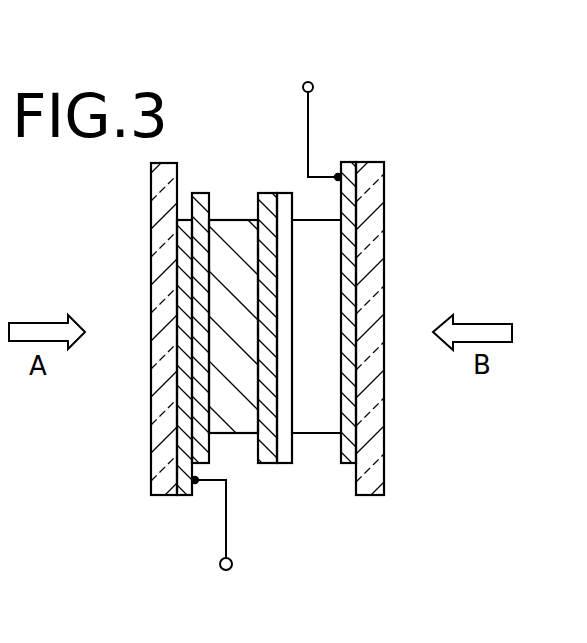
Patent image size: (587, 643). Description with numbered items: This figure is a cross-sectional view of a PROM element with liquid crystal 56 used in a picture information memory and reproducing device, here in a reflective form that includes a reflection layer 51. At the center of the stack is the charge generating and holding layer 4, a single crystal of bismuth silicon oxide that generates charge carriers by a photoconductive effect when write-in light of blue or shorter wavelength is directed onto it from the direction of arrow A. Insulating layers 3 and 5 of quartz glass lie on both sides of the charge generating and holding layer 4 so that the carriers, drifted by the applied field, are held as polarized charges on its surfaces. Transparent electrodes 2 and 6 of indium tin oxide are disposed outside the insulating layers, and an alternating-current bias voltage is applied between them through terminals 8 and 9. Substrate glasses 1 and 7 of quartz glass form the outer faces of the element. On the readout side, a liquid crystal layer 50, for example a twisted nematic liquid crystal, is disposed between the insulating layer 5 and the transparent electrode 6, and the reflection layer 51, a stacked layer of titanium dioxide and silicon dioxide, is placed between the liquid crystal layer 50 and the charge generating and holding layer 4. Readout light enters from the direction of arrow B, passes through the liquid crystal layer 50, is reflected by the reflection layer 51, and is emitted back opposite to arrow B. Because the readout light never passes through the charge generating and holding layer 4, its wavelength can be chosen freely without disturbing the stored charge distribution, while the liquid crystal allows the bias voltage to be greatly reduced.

The substrate glass 1 is at (160, 496).
The transparent electrode 2 is at (183, 496).
The insulating layer 3 is at (200, 192).
The charge generating and holding layer 4 is at (235, 425).
The insulating layer 5 is at (265, 192).
The transparent electrode 6 is at (345, 464).
The substrate glass 7 is at (385, 230).
The terminal 8 is at (214, 541).
The terminal 9 is at (322, 118).
The liquid crystal layer 50 is at (308, 422).
The reflection layer 51 is at (282, 192).
The PROM element with liquid crystal 56 is at (381, 61).